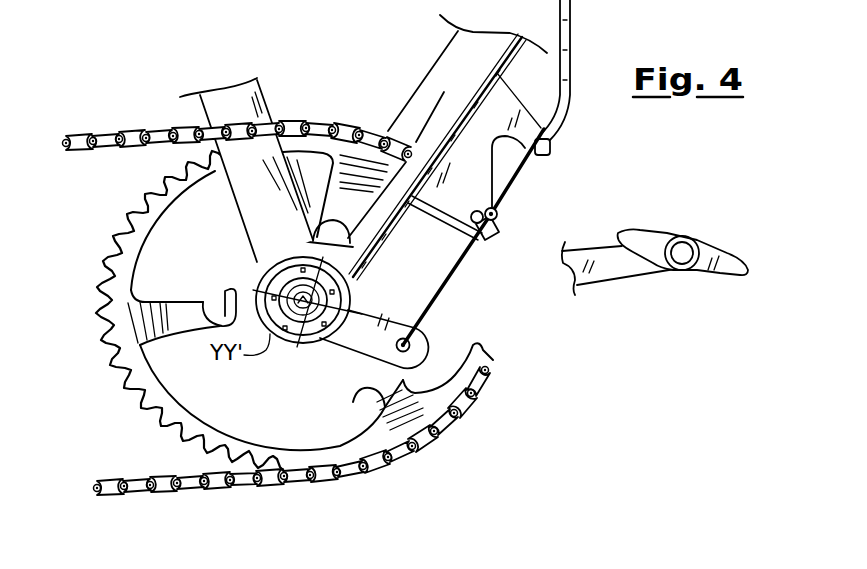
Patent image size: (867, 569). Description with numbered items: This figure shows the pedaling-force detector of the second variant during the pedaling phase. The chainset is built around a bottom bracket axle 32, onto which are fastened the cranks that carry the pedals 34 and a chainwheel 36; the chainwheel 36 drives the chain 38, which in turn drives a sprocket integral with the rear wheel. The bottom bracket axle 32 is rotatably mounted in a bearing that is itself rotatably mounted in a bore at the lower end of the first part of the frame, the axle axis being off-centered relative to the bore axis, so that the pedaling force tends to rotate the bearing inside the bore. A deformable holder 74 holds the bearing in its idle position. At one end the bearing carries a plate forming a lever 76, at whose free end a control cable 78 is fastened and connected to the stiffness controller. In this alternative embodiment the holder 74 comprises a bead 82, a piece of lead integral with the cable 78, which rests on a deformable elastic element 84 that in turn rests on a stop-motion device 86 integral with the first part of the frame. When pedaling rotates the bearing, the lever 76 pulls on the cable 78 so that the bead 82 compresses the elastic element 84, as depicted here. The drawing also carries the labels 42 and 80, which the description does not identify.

The bottom bracket axle 32 is at (318, 347).
The pedals 34 is at (722, 273).
The chainwheel 36 is at (163, 400).
The chain 38 is at (80, 141).
The frame member 42 is at (487, 260).
The deformable holder 74 is at (513, 220).
The lever 76 is at (367, 310).
The control cable 78 is at (450, 280).
The pivot pin 80 is at (427, 337).
The bead 82 is at (495, 212).
The deformable elastic element 84 is at (476, 210).
The stop-motion device 86 is at (440, 203).